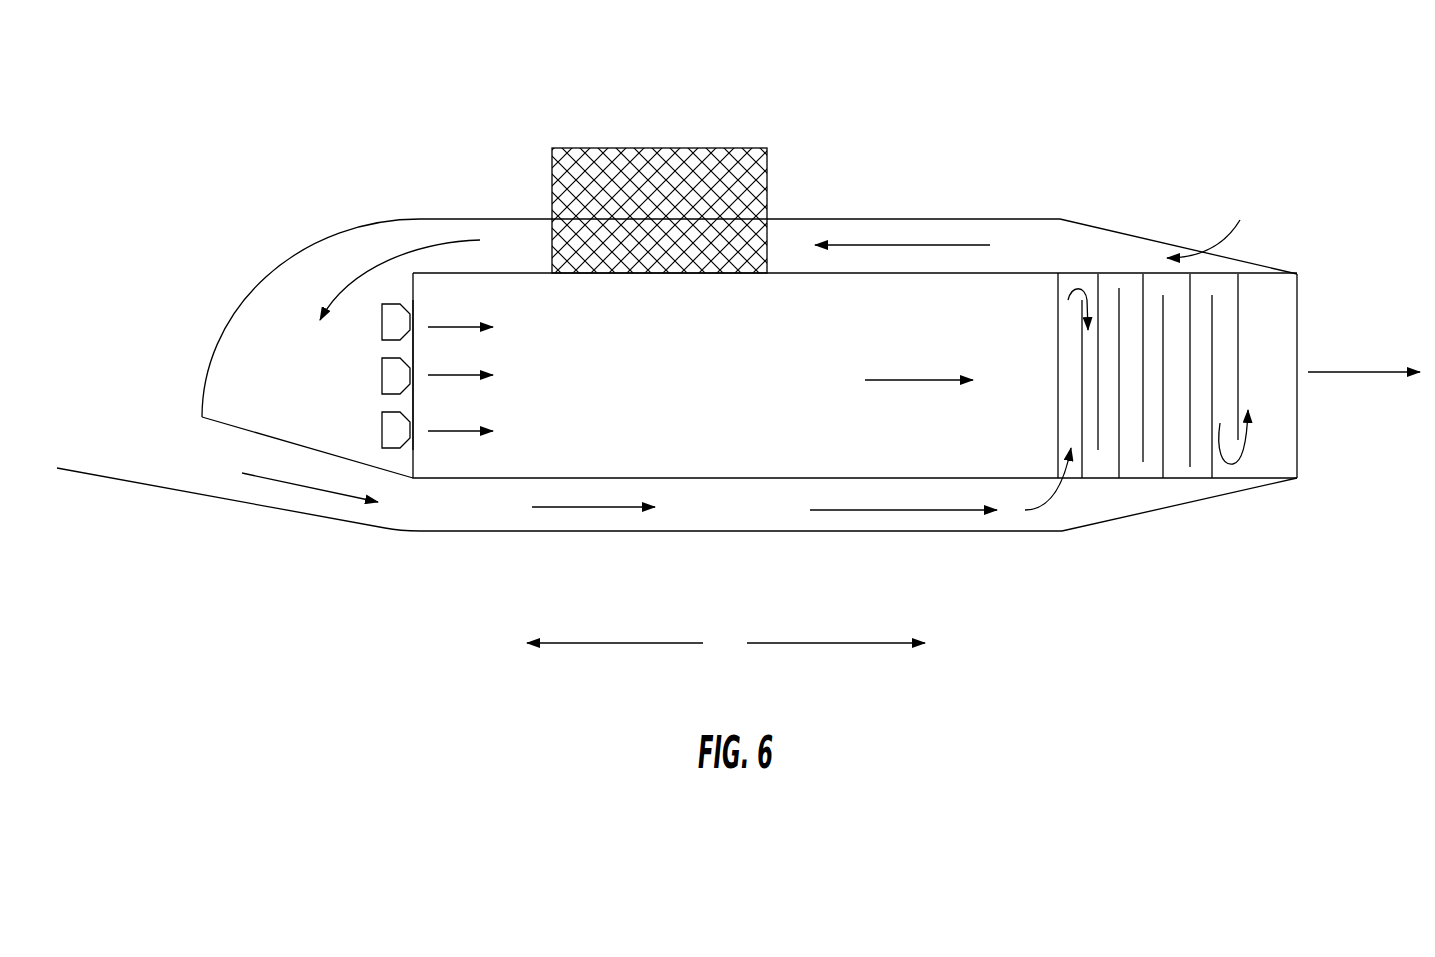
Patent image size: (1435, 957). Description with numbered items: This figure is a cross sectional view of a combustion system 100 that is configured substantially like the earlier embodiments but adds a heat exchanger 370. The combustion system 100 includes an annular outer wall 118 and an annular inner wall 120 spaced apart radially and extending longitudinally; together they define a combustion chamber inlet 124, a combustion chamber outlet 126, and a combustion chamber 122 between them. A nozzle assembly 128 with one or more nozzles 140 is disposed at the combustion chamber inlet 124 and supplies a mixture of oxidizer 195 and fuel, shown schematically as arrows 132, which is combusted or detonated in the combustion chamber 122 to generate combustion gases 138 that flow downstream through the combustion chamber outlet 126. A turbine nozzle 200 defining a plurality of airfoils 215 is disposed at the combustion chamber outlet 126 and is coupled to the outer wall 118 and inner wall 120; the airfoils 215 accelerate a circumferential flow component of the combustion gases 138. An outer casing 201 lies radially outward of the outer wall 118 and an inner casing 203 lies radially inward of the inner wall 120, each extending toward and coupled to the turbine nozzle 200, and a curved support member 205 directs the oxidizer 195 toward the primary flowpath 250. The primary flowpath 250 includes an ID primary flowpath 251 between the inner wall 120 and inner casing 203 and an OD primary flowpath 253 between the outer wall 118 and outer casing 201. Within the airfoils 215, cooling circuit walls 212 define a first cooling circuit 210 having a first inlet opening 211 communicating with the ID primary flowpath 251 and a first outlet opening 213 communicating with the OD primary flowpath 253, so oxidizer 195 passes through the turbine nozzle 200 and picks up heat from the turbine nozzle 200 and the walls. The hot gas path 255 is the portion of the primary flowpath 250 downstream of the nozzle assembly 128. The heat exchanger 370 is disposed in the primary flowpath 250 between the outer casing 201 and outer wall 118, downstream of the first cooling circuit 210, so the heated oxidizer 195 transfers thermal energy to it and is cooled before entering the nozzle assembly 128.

The combustion system 100 is at (913, 110).
The annular outer wall 118 is at (693, 273).
The annular inner wall 120 is at (855, 317).
The combustion chamber 122 is at (628, 389).
The combustion chamber inlet 124 is at (423, 317).
The combustion chamber outlet 126 is at (1050, 303).
The nozzle assembly 128 is at (395, 283).
The fuel/oxidizer mixture 132 is at (452, 433).
The combustion gases 138 is at (885, 380).
The nozzle 140 is at (382, 430).
The oxidizer 195 is at (362, 273).
The turbine nozzle 200 is at (1260, 263).
The outer casing 201 is at (1060, 218).
The inner casing 203 is at (940, 531).
The support member 205 is at (210, 360).
The first cooling circuit 210 is at (1273, 355).
The first inlet opening 211 is at (1073, 483).
The cooling circuit walls 212 is at (1163, 462).
The first outlet opening 213 is at (1270, 280).
The airfoils 215 is at (1307, 443).
The primary flowpath 250 is at (88, 414).
The ID primary flowpath 251 is at (738, 519).
The OD primary flowpath 253 is at (809, 260).
The hot gas path 255 is at (1034, 394).
The heat exchanger 370 is at (597, 148).